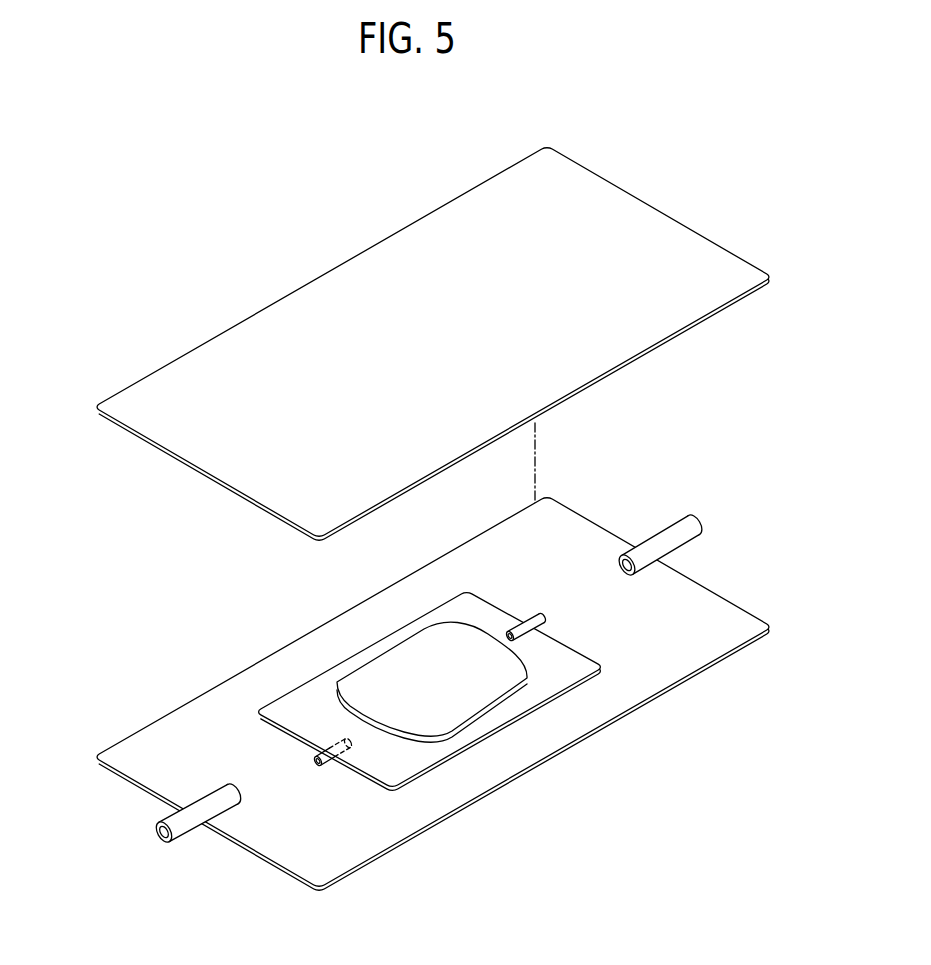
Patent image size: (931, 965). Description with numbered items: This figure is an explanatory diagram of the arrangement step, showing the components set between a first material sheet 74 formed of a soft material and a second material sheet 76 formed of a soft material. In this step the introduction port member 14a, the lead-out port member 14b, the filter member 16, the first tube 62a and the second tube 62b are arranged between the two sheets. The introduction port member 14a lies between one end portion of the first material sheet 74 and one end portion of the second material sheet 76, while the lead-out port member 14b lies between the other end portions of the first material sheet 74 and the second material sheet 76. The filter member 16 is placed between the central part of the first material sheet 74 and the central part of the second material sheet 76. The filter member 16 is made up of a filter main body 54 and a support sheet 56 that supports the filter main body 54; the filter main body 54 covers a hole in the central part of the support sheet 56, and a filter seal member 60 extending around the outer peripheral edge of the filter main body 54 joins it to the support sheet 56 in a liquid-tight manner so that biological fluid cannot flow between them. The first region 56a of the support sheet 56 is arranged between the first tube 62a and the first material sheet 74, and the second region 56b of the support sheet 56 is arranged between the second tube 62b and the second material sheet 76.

The first material sheet 74 is at (342, 288).
The second material sheet 76 is at (682, 668).
The introduction port member 14a is at (688, 532).
The lead-out port member 14b is at (185, 830).
The filter member 16 is at (347, 647).
The support sheet 56 is at (285, 707).
The first region 56a is at (344, 749).
The second region 56b is at (514, 627).
The first tube 62a is at (312, 761).
The second tube 62b is at (546, 620).
The filter main body 54 is at (494, 677).
The filter seal member 60 is at (449, 734).